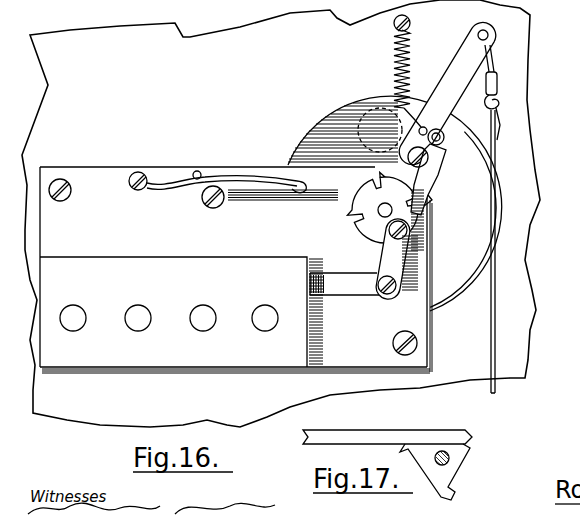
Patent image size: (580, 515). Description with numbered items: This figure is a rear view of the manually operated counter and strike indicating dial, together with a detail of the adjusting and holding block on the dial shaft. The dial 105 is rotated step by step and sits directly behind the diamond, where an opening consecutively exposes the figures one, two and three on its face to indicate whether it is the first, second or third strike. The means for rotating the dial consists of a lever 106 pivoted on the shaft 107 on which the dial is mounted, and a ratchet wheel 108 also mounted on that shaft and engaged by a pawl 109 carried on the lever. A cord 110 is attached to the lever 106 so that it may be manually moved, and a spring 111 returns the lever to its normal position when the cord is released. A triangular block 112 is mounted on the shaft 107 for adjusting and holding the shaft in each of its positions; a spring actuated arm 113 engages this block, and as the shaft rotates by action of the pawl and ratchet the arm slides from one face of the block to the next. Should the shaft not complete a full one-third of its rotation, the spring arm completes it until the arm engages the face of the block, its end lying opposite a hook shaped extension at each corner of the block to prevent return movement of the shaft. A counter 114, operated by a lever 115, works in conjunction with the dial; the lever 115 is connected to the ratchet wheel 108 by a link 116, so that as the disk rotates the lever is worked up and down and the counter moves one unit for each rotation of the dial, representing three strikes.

In FIG. 16, the dial 105 is at (473, 198).
In FIG. 16, the lever 106 is at (477, 62).
In FIG. 16, the shaft 107 is at (378, 212).
In FIG. 17, the shaft 107 is at (448, 462).
In FIG. 16, the ratchet wheel 108 is at (408, 211).
In FIG. 16, the pawl 109 is at (430, 202).
In FIG. 16, the cord 110 is at (497, 273).
In FIG. 16, the spring 111 is at (402, 58).
In FIG. 17, the triangular block 112 is at (475, 445).
In FIG. 16, the spring actuated arm 113 is at (253, 188).
In FIG. 17, the spring actuated arm 113 is at (375, 432).
In FIG. 16, the counter 114 is at (169, 302).
In FIG. 16, the lever 115 is at (355, 290).
In FIG. 16, the link 116 is at (385, 258).